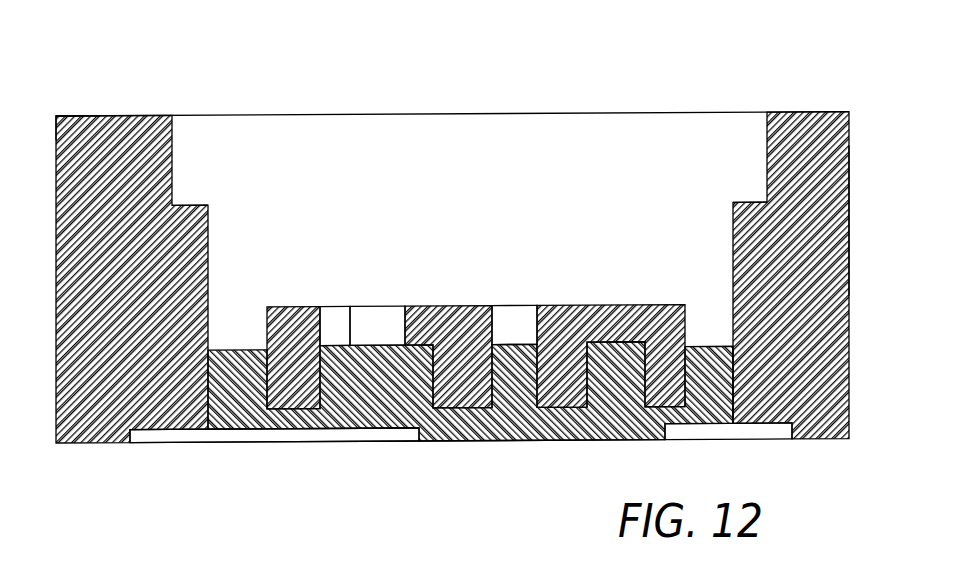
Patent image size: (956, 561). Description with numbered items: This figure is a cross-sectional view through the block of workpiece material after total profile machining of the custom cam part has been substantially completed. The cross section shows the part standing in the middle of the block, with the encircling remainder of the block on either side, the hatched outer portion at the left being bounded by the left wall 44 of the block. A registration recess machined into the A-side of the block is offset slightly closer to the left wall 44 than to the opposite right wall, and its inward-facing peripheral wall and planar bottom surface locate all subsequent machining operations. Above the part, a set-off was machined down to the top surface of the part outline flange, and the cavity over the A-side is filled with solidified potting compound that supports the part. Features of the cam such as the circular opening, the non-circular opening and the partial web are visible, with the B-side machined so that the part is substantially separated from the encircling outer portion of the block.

The left wall 44 is at (850, 212).